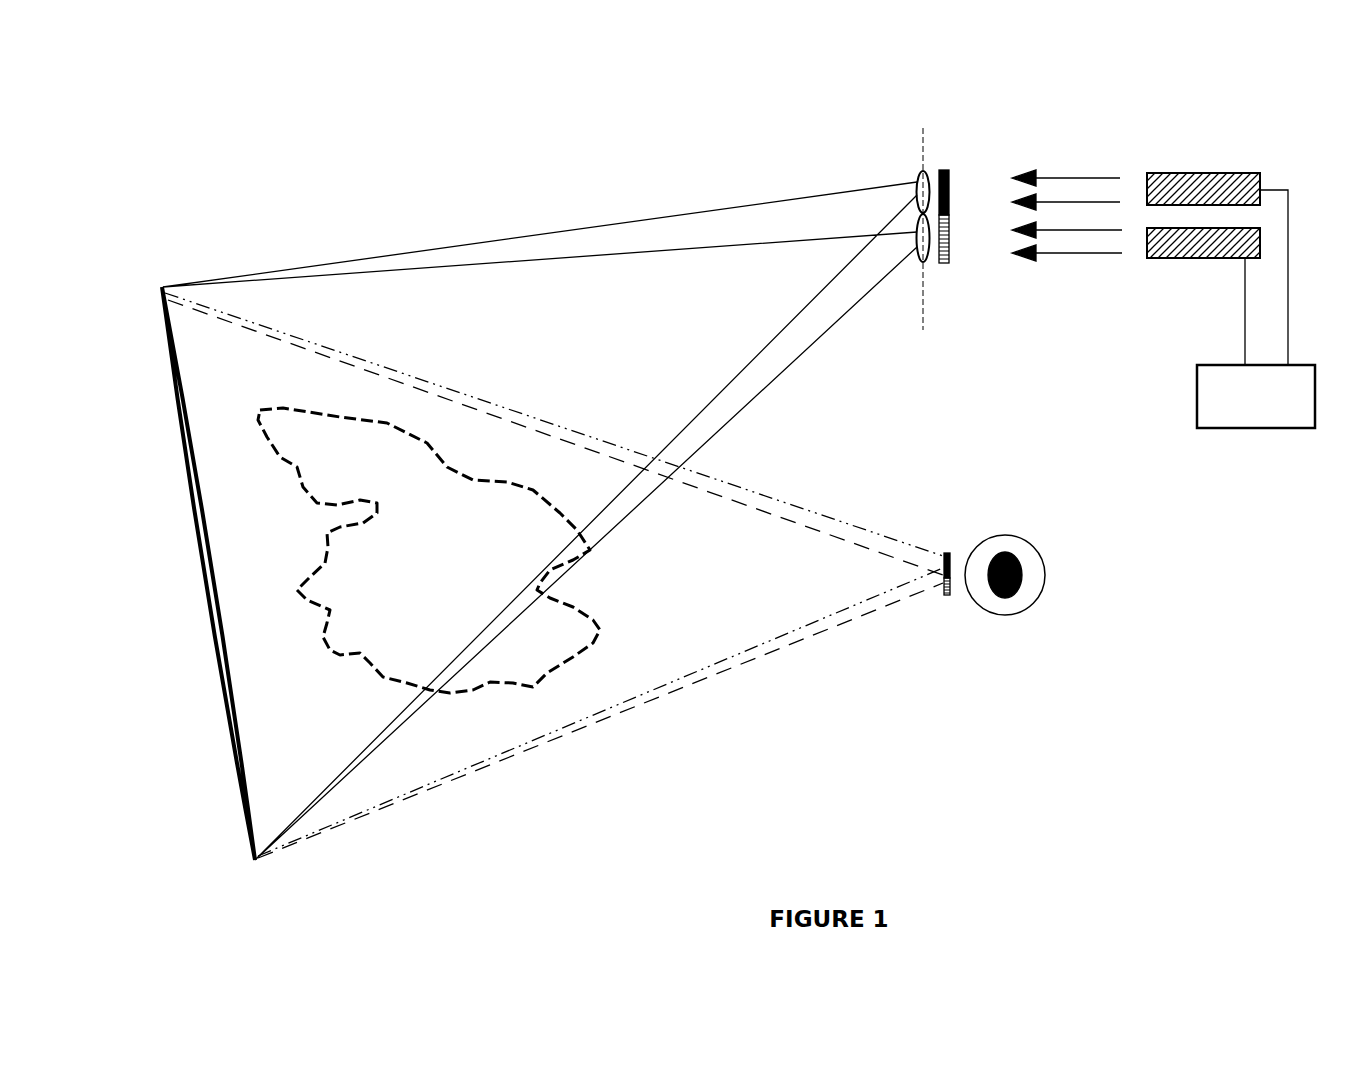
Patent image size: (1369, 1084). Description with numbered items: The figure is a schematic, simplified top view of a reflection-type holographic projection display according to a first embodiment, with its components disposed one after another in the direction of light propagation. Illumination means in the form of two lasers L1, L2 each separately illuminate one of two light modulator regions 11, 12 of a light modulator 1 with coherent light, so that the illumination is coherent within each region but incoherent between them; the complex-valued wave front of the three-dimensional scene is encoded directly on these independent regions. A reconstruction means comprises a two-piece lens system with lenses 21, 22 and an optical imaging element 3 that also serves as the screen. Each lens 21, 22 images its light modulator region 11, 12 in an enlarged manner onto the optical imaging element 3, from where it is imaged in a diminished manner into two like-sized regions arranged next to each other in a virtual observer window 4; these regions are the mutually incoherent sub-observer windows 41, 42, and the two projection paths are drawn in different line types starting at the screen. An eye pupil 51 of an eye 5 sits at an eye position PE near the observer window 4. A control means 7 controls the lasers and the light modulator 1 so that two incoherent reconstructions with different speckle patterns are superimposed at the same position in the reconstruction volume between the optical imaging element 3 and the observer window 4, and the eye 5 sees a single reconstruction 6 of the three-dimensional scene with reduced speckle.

The light modulator 1 is at (997, 238).
The optical imaging element 3 is at (163, 287).
The observer window 4 is at (955, 570).
The eye 5 is at (1044, 554).
The reconstruction 6 is at (497, 663).
The control means 7 is at (1248, 428).
The light modulator region 11 is at (947, 265).
The light modulator region 12 is at (947, 170).
The lens 21 is at (918, 157).
The lens 22 is at (922, 294).
The sub-observer window 41 is at (945, 595).
The sub-observer window 42 is at (945, 555).
The eye pupil 51 is at (1017, 590).
The eye position PE is at (1015, 555).
The laser L1 is at (1203, 169).
The laser L2 is at (1203, 269).